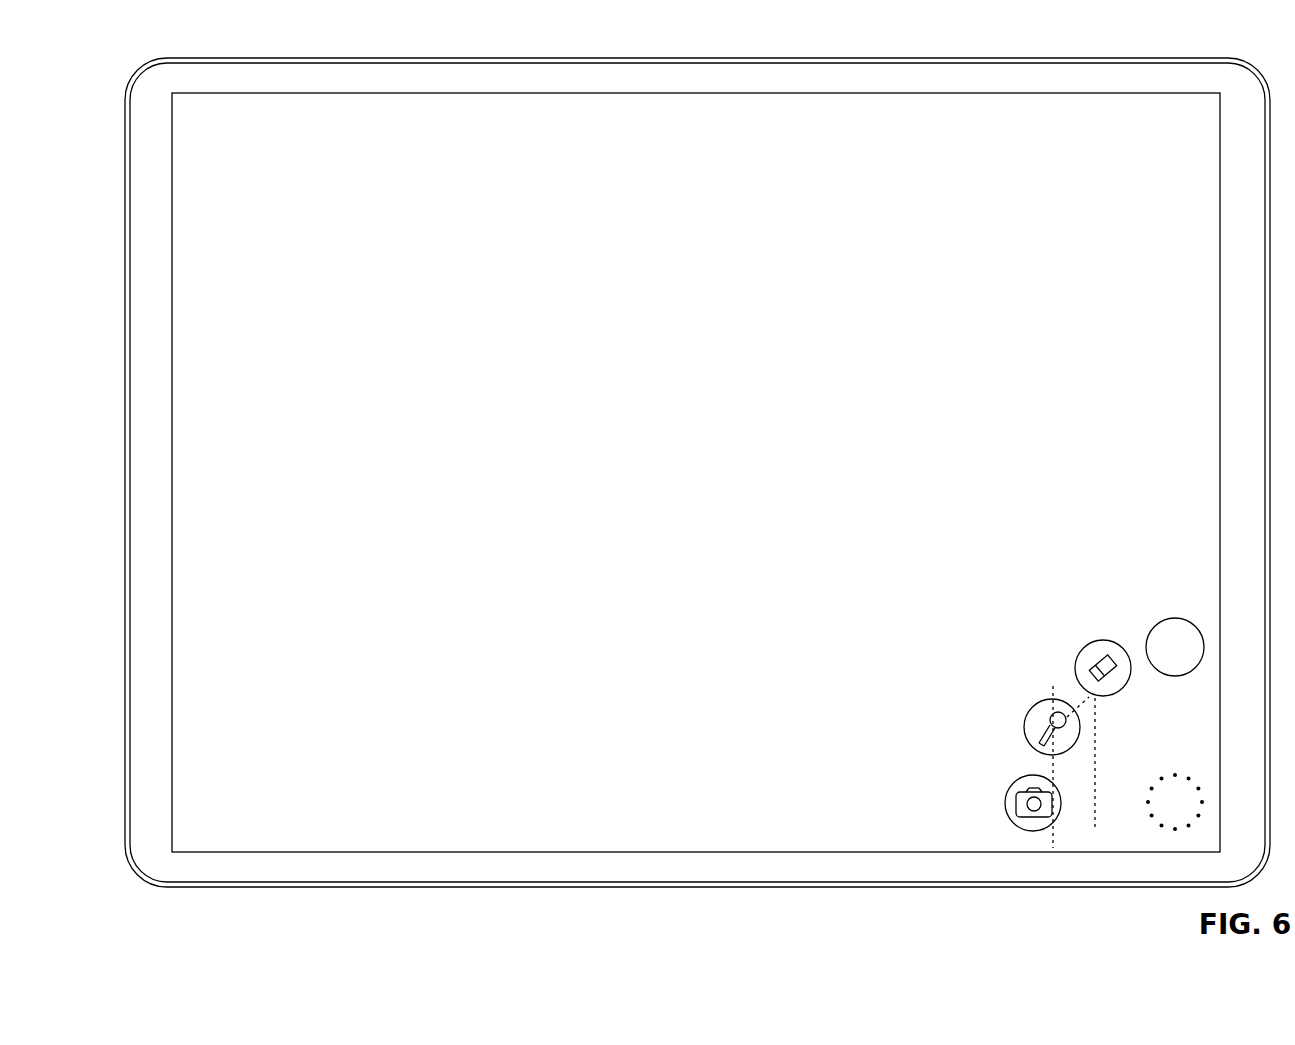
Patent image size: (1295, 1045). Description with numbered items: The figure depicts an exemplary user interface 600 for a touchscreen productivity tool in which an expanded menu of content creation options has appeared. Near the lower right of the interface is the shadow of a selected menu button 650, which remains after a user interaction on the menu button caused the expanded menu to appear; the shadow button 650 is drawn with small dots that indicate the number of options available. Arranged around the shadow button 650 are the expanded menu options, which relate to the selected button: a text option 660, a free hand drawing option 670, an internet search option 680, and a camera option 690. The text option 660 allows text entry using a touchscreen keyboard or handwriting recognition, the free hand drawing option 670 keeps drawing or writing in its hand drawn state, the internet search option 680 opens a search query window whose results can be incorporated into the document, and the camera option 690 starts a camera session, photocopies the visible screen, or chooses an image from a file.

The user interface 600 is at (677, 45).
The shadow of a selected menu button 650 is at (1173, 768).
The text option 660 is at (1172, 618).
The free hand drawing option 670 is at (1091, 643).
The internet search option 680 is at (1038, 703).
The camera option 690 is at (1017, 780).